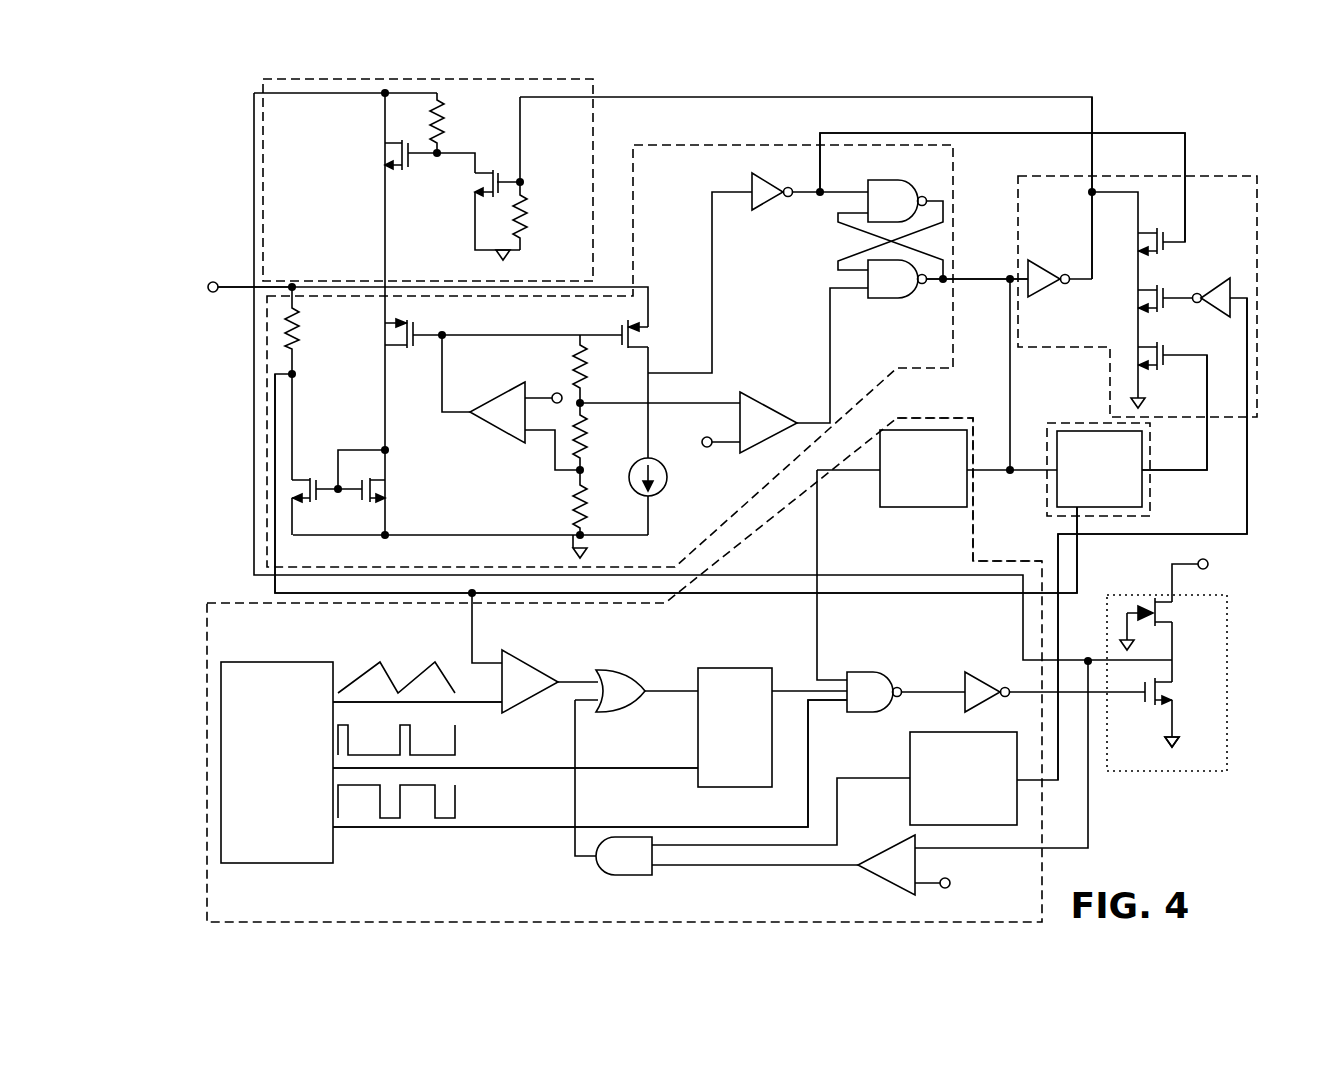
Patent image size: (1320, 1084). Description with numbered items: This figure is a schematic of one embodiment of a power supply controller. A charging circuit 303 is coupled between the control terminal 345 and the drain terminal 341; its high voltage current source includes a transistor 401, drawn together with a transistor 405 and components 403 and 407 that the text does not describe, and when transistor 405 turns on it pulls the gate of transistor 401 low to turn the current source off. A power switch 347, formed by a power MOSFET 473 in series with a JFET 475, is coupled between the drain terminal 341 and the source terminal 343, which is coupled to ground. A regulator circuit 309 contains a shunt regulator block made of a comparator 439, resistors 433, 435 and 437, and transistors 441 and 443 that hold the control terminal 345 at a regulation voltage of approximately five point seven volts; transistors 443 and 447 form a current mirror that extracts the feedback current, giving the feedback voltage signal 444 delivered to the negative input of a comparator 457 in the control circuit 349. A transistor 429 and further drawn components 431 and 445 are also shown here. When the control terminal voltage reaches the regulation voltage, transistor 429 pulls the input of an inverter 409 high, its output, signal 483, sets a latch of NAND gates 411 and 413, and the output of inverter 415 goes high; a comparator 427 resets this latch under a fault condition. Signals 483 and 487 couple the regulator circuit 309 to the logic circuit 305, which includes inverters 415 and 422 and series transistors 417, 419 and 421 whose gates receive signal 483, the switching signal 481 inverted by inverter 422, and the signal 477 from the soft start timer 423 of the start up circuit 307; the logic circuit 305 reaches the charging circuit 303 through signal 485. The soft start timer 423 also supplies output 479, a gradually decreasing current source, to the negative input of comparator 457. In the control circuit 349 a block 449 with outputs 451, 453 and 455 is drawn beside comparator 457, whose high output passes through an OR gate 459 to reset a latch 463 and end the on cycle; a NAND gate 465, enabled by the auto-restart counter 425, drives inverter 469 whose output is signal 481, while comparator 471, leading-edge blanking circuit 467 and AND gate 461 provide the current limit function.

The charging circuit 303 is at (593, 126).
The logic circuit 305 is at (1236, 157).
The start up circuit 307 is at (1056, 423).
The regulator circuit 309 is at (775, 127).
The drain terminal 341 is at (1207, 569).
The source terminal 343 is at (1178, 750).
The control terminal 345 is at (204, 287).
The power switch 347 is at (1234, 666).
The control circuit 349 is at (937, 418).
The transistor 401 is at (367, 158).
The resistor 403 is at (440, 118).
The transistor 405 is at (467, 186).
The resistor 407 is at (531, 219).
The inverter 409 is at (766, 212).
The NAND gate 411 is at (890, 166).
The NAND gate 413 is at (890, 298).
The inverter 415 is at (1039, 296).
The transistor 417 is at (1171, 250).
The transistor 419 is at (1164, 292).
The transistor 421 is at (1167, 355).
The inverter 422 is at (1212, 306).
The soft start timer 423 is at (1090, 430).
The auto-restart counter 425 is at (913, 508).
The comparator 427 is at (768, 408).
The transistor 429 is at (649, 334).
The current source 431 is at (662, 494).
The resistor 433 is at (571, 369).
The resistor 435 is at (585, 435).
The resistor 437 is at (552, 504).
The comparator 439 is at (492, 399).
The transistor 441 is at (379, 338).
The transistor 443 is at (391, 488).
The feedback voltage signal 444 is at (274, 581).
The resistor 445 is at (307, 331).
The transistor 447 is at (304, 469).
The oscillator 449 is at (285, 662).
The sawtooth waveform output 451 is at (284, 696).
The clock output 453 is at (294, 761).
The maximum duty cycle output 455 is at (296, 820).
The comparator 457 is at (540, 664).
The OR gate 459 is at (636, 675).
The AND gate 461 is at (612, 876).
The latch 463 is at (753, 668).
The NAND gate 465 is at (863, 670).
The leading-edge blanking circuit 467 is at (902, 750).
The inverter 469 is at (987, 675).
The comparator 471 is at (884, 880).
The power MOSFET 473 is at (1172, 697).
The JFET 475 is at (1172, 626).
The signal 477 is at (1164, 472).
The signal 479 is at (1075, 519).
The signal 481 is at (1250, 521).
The signal 483 is at (905, 118).
The signal 485 is at (1092, 133).
The signal 487 is at (988, 286).